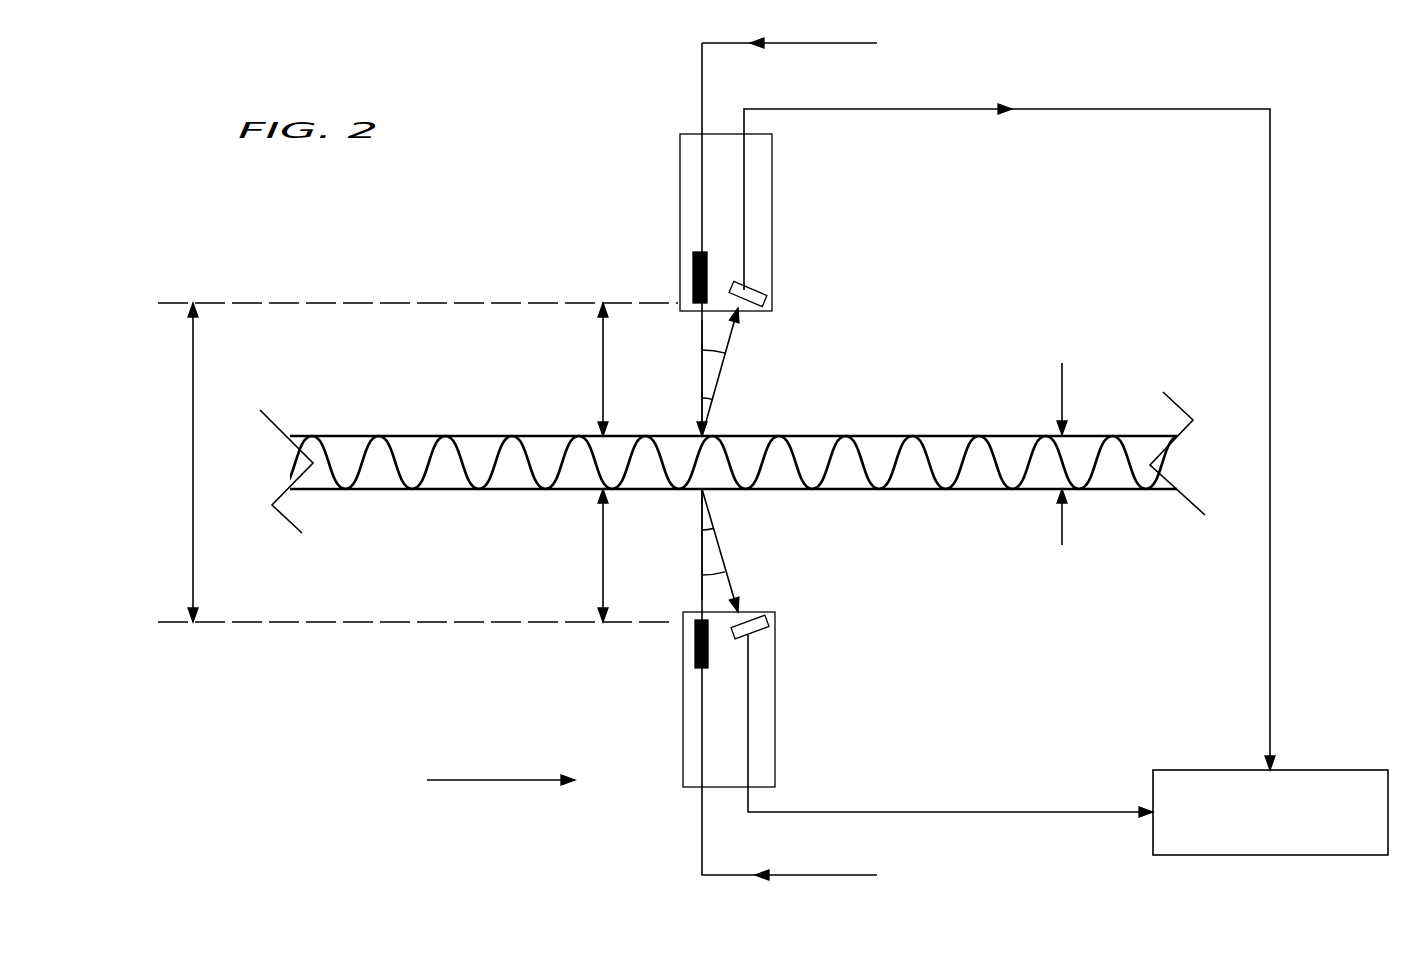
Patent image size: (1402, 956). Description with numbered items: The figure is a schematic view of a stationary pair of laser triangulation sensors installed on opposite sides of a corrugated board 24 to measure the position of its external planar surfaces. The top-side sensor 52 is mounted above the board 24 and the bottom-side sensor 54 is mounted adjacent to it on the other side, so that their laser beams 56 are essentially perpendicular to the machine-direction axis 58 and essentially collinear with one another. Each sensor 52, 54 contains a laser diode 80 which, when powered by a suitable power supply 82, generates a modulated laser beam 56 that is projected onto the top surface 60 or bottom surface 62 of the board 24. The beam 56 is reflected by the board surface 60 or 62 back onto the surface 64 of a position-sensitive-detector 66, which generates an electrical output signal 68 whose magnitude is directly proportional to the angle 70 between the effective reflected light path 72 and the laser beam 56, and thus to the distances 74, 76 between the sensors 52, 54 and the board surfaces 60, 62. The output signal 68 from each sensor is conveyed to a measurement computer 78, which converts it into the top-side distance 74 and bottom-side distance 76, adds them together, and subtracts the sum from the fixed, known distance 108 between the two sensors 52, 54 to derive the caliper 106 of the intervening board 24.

The board 24 is at (838, 478).
The top-side sensor 52 is at (773, 197).
The bottom-side sensor 54 is at (775, 722).
The laser beam 56 is at (702, 380).
The machine-direction axis 58 is at (475, 782).
The board surface 60 is at (873, 436).
The board surface 62 is at (930, 490).
The surface of position-sensitive-detector 64 is at (750, 312).
The position-sensitive-detector 66 is at (757, 290).
The electrical output signal 68 is at (890, 110).
The angle 70 is at (720, 350).
The effective reflected light path 72 is at (712, 398).
The top-side distance 74 is at (603, 372).
The bottom-side distance 76 is at (603, 555).
The measurement computer 78 is at (1270, 812).
The laser diode 80 is at (693, 267).
The power supply 82 is at (702, 78).
The caliper 106 is at (1062, 388).
The distance between the two sensors 108 is at (193, 372).